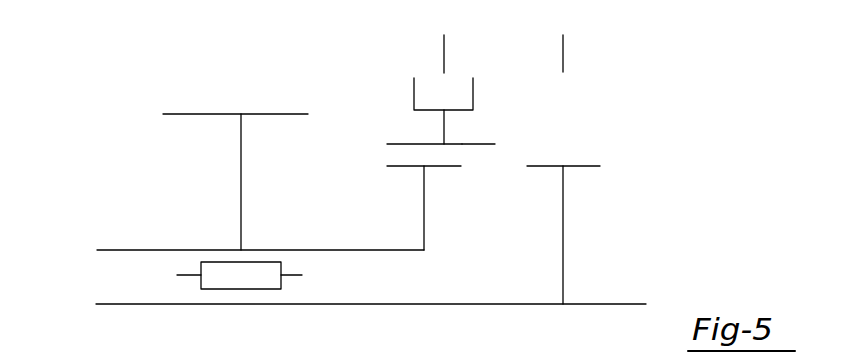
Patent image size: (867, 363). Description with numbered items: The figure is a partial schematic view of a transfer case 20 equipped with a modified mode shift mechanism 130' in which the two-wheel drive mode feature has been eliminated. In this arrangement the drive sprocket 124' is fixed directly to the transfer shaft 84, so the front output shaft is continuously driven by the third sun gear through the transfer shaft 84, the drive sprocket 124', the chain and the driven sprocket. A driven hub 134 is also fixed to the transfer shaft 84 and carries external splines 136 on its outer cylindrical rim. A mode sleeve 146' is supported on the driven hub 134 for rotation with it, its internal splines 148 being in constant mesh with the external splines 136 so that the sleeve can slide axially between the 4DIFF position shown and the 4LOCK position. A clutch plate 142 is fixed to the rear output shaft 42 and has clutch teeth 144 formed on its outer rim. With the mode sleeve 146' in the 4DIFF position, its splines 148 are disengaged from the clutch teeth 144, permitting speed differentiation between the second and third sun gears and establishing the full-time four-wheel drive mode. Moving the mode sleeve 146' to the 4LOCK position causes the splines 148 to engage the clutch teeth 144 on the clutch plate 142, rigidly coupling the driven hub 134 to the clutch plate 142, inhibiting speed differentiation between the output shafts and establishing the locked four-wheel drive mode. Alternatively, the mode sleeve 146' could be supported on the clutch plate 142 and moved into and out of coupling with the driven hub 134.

The transfer case 20 is at (121, 110).
The mode shift mechanism 130' is at (244, 80).
The drive sprocket 124' is at (279, 182).
The transfer shaft 84 is at (157, 250).
The rear output shaft 42 is at (620, 304).
The external splines 136 is at (393, 165).
The driven hub 134 is at (424, 216).
The mode sleeve 146' is at (405, 78).
The internal splines 148 is at (477, 144).
The clutch teeth 144 is at (579, 166).
The clutch plate 142 is at (564, 245).